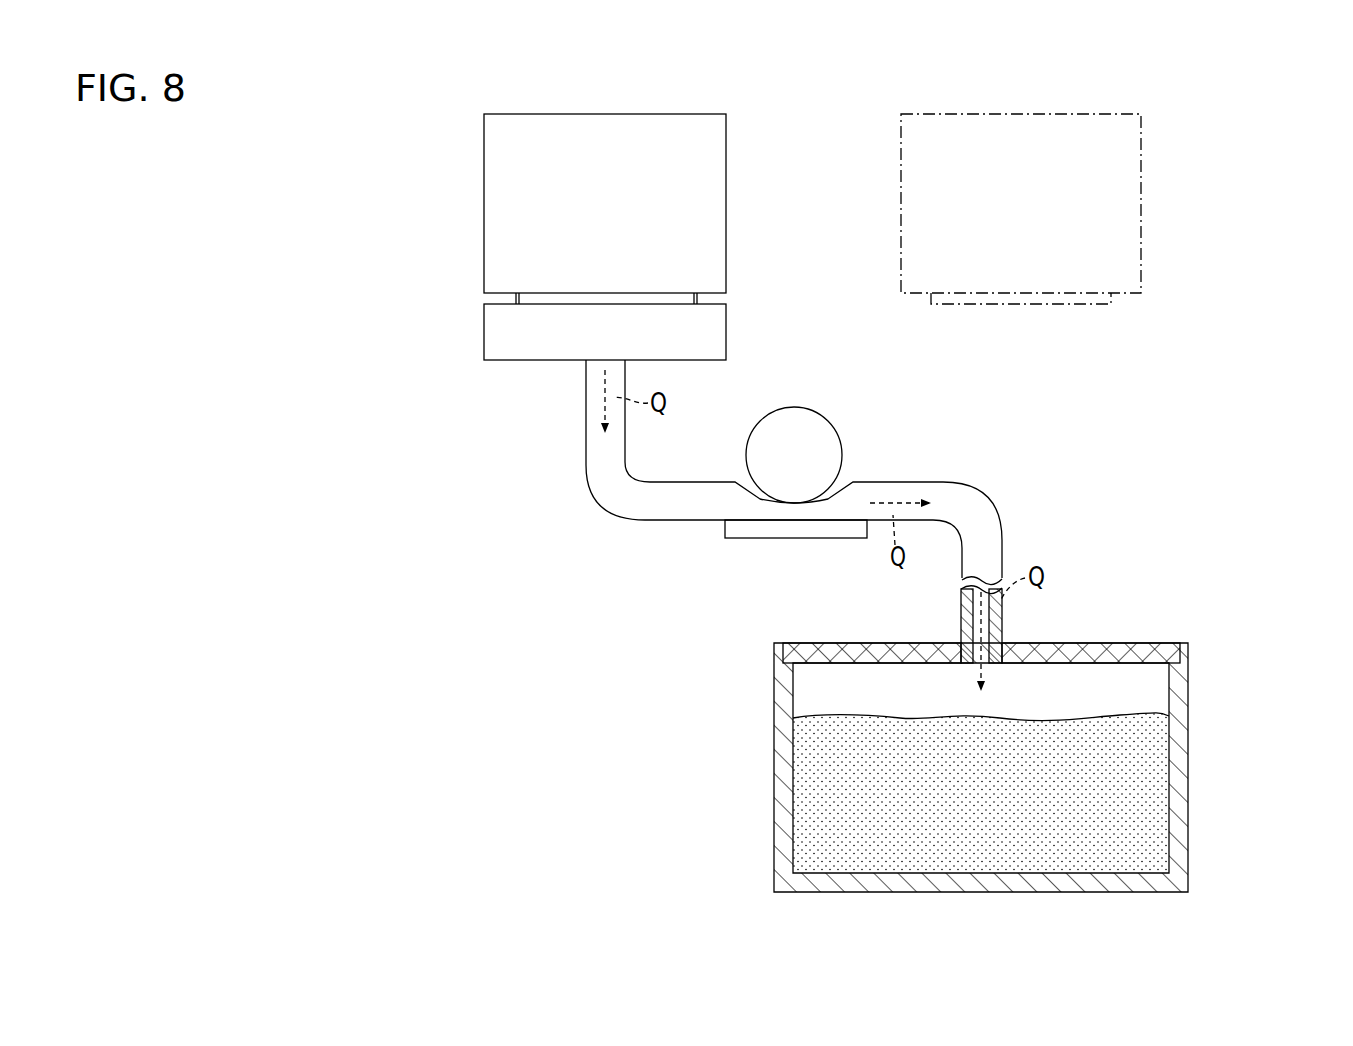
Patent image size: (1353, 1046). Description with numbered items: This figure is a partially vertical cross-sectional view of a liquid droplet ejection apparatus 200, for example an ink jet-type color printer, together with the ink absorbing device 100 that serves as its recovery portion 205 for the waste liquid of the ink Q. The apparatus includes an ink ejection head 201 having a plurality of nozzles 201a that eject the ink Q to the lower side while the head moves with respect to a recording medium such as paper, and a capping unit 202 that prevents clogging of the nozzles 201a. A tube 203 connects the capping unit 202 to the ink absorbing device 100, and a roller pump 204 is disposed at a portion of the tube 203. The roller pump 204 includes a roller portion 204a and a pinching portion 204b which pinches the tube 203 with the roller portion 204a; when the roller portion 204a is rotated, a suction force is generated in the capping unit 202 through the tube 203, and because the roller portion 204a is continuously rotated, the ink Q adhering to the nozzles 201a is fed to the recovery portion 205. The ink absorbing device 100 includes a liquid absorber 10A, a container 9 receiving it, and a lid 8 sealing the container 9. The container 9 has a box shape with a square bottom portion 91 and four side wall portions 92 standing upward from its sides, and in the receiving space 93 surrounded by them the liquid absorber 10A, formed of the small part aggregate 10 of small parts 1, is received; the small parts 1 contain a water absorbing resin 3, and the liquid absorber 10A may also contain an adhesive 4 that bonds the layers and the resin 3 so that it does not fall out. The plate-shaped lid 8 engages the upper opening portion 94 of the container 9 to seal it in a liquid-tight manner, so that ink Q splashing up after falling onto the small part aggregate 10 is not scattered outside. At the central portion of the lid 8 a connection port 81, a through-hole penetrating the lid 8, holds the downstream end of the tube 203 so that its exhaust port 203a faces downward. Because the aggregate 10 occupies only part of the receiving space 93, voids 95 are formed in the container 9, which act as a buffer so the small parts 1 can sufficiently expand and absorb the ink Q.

The liquid droplet ejection apparatus 200 is at (376, 119).
The ink ejection head 201 is at (697, 112).
The nozzles 201a is at (526, 298).
The capping unit 202 is at (729, 330).
The tube 203 is at (980, 507).
The exhaust port 203a is at (1002, 662).
The roller pump 204 is at (889, 452).
The roller portion 204a is at (815, 447).
The pinching portion 204b is at (795, 538).
The recovery portion 205 is at (770, 638).
The ink absorbing device 100 is at (1049, 750).
The lid 8 is at (1166, 637).
The container 9 is at (1192, 686).
The small parts 1 is at (1030, 789).
The side wall portions 92 is at (1180, 782).
The receiving space 93 is at (808, 683).
The upper opening portion 94 is at (968, 665).
The voids 95 is at (1117, 680).
The connection port 81 is at (968, 640).
The small part aggregate 10 is at (808, 855).
The liquid absorber 10A is at (808, 810).
The adhesive 4 is at (847, 870).
The water absorbing resin 3 is at (883, 870).
The bottom portion 91 is at (970, 878).